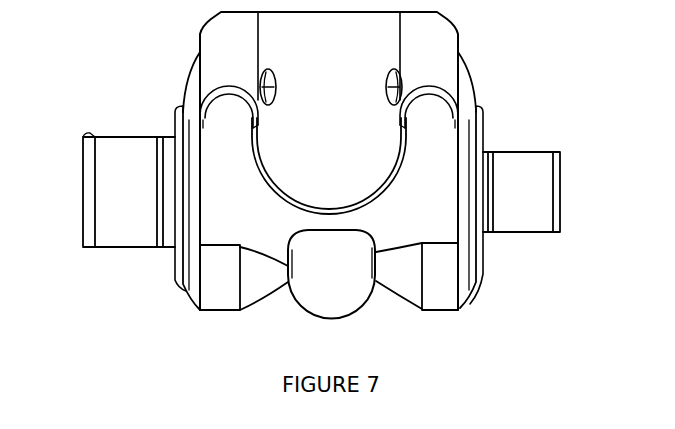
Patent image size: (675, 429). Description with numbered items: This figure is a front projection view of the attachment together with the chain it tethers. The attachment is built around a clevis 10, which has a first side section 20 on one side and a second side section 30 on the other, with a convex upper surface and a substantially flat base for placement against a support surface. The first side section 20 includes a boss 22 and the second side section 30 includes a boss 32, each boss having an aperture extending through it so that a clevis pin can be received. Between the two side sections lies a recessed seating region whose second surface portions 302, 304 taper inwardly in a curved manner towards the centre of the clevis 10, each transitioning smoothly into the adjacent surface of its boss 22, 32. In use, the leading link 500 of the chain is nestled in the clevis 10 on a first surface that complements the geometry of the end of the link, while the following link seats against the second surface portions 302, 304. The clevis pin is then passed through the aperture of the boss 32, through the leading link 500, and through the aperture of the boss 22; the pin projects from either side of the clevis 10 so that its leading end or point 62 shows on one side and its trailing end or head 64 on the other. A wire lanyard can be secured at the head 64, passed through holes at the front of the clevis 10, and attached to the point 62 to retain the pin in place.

The clevis 10 is at (440, 58).
The first side section 20 is at (483, 278).
The boss 22 is at (441, 280).
The second side section 30 is at (178, 283).
The boss 32 is at (222, 314).
The leading end or point 62 is at (525, 233).
The trailing end or head 64 is at (122, 248).
The second surface portion 302 is at (403, 297).
The second surface portion 304 is at (263, 296).
The leading link 500 is at (352, 312).